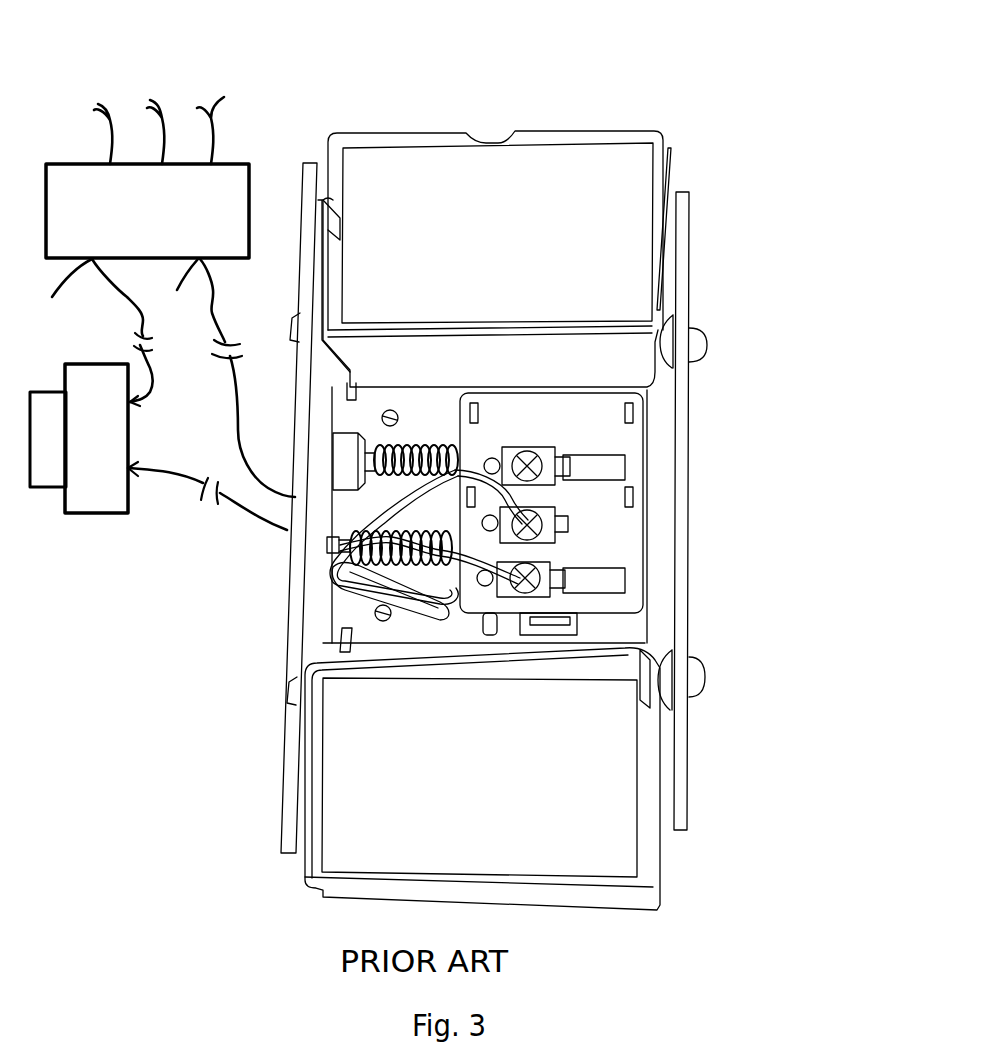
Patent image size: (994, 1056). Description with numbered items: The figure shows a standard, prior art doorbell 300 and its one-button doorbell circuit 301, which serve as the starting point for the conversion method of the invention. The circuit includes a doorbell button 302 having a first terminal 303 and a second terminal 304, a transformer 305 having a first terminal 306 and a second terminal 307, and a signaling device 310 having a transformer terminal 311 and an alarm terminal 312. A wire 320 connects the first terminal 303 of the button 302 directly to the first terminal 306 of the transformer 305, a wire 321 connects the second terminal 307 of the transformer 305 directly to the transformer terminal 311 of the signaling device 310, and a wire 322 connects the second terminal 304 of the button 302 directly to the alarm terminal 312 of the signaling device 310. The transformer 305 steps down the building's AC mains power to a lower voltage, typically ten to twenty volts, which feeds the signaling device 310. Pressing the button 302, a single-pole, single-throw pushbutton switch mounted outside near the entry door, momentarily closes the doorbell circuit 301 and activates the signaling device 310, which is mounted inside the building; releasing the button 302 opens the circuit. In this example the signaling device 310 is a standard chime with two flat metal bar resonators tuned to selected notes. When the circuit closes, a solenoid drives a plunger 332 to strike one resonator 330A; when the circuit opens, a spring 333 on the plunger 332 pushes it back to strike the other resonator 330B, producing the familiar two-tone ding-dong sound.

The doorbell 300 is at (543, 78).
The doorbell circuit 301 is at (247, 522).
The doorbell button 302 is at (72, 513).
The first terminal 303 is at (128, 402).
The second terminal 304 is at (128, 467).
The transformer 305 is at (238, 164).
The first terminal 306 is at (66, 295).
The second terminal 307 is at (184, 293).
The signaling device 310 is at (666, 172).
The transformer terminal 311 is at (570, 522).
The alarm terminal 312 is at (568, 578).
The wire 320 is at (127, 298).
The wire 321 is at (213, 307).
The wire 322 is at (177, 472).
The resonator 330A is at (290, 625).
The resonator 330B is at (693, 283).
The plunger 332 is at (392, 497).
The spring 333 is at (410, 575).